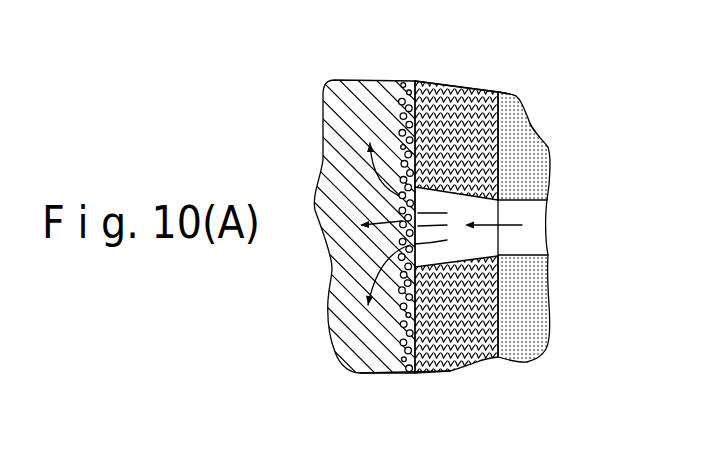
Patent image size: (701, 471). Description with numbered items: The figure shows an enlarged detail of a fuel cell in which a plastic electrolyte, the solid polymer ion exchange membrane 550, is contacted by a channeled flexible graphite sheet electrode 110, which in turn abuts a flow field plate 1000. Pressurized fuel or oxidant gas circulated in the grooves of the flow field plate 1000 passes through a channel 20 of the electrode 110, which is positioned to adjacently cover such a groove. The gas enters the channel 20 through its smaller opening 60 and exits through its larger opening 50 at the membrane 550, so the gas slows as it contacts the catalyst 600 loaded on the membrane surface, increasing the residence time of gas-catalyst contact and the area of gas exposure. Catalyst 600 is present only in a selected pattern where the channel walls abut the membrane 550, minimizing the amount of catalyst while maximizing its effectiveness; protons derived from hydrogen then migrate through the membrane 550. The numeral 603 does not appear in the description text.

The solid polymer ion exchange membrane 550 is at (342, 80).
The particles 603 is at (405, 80).
The larger opening 50 is at (440, 213).
The channeled flexible graphite sheet electrode 110 is at (482, 91).
The flow field plate 1000 is at (533, 157).
The smaller opening 60 is at (498, 239).
The channel 20 is at (455, 265).
The catalyst 600 is at (410, 372).